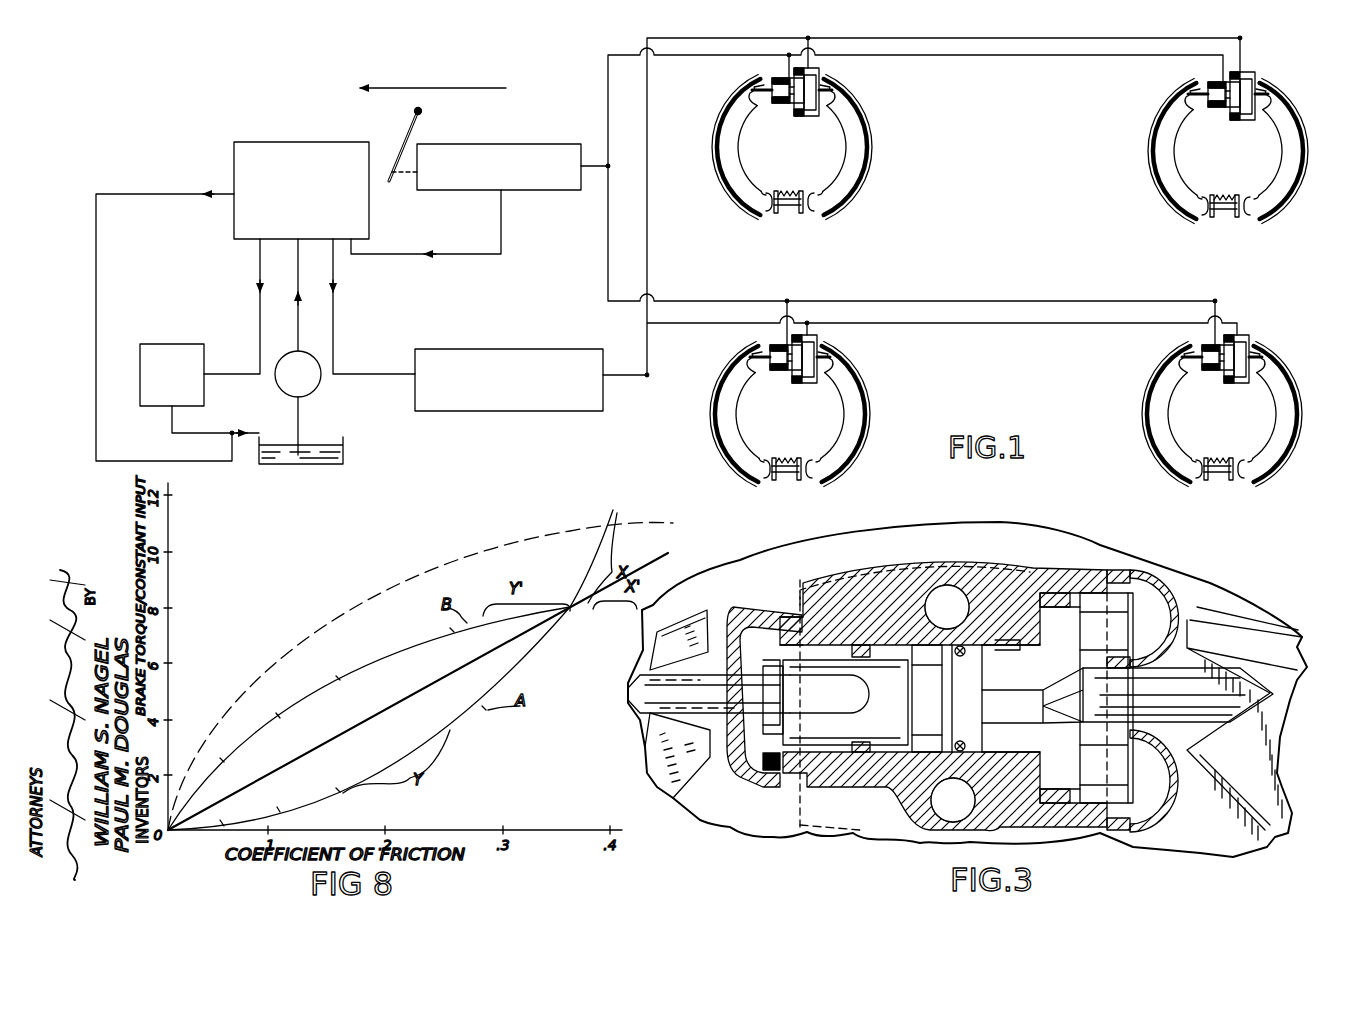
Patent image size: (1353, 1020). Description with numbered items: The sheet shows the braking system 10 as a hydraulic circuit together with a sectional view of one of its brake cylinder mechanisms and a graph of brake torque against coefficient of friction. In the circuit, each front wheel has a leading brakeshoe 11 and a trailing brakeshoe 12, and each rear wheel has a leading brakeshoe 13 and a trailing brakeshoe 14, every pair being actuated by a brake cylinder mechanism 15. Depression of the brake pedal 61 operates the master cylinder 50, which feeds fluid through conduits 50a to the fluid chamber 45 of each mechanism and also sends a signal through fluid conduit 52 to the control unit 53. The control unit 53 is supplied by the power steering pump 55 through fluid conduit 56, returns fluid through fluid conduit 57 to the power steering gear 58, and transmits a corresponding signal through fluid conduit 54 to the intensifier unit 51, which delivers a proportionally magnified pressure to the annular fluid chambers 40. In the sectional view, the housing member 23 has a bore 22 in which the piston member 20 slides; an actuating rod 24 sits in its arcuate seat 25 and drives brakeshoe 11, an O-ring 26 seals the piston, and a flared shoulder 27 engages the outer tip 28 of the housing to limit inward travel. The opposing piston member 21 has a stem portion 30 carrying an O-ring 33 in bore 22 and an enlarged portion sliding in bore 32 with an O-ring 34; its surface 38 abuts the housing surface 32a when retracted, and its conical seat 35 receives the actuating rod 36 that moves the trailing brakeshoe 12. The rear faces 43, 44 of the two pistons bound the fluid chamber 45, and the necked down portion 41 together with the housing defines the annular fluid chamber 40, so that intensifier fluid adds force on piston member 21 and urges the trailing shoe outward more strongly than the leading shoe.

In FIG. 1, the braking system 10 is at (530, 73).
In FIG. 1, the front brakeshoe 11 is at (735, 283).
In FIG. 3, the front brakeshoe 11 is at (662, 628).
In FIG. 1, the front brakeshoe 12 is at (845, 283).
In FIG. 3, the front brakeshoe 12 is at (1266, 594).
In FIG. 1, the rear brakeshoe 13 is at (1167, 285).
In FIG. 1, the rear brakeshoe 14 is at (1279, 285).
In FIG. 1, the brake cylinder mechanism 15 is at (1031, 269).
In FIG. 3, the brake cylinder mechanism 15 is at (1100, 545).
In FIG. 3, the piston member 20 is at (882, 758).
In FIG. 3, the piston member 21 is at (1017, 737).
In FIG. 3, the bore 22 is at (814, 646).
In FIG. 3, the housing member 23 is at (862, 612).
In FIG. 3, the actuating rod 24 is at (652, 690).
In FIG. 3, the arcuate seat 25 is at (858, 694).
In FIG. 3, the O-ring 26 is at (858, 746).
In FIG. 3, the shoulder 27 is at (768, 742).
In FIG. 3, the outer tip 28 is at (785, 772).
In FIG. 3, the stem portion 30 is at (970, 648).
In FIG. 3, the bore 32 is at (1046, 590).
In FIG. 3, the surface 32a is at (1046, 788).
In FIG. 3, the O-ring 33 is at (950, 703).
In FIG. 3, the O-ring 34 is at (1068, 592).
In FIG. 3, the conical seat 35 is at (1043, 704).
In FIG. 3, the actuating rod 36 is at (1200, 713).
In FIG. 3, the surface 38 is at (1042, 800).
In FIG. 1, the annular fluid chamber 40 is at (1028, 240).
In FIG. 3, the annular fluid chamber 40 is at (1034, 770).
In FIG. 3, the necked down portion 41 is at (1020, 642).
In FIG. 3, the rear face 43 is at (904, 732).
In FIG. 3, the rear face 44 is at (927, 658).
In FIG. 1, the fluid chamber 45 is at (995, 240).
In FIG. 3, the fluid chamber 45 is at (936, 694).
In FIG. 1, the master cylinder 50 is at (487, 144).
In FIG. 1, the fluid conduits 50a is at (608, 88).
In FIG. 1, the intensifier unit 51 is at (520, 349).
In FIG. 1, the fluid conduit 52 is at (470, 252).
In FIG. 1, the control unit 53 is at (326, 142).
In FIG. 1, the fluid conduit 54 is at (333, 344).
In FIG. 1, the power steering pump 55 is at (318, 384).
In FIG. 1, the fluid conduit 56 is at (298, 262).
In FIG. 1, the fluid conduit 57 is at (260, 262).
In FIG. 1, the power steering gear 58 is at (184, 344).
In FIG. 1, the brake pedal 61 is at (397, 152).